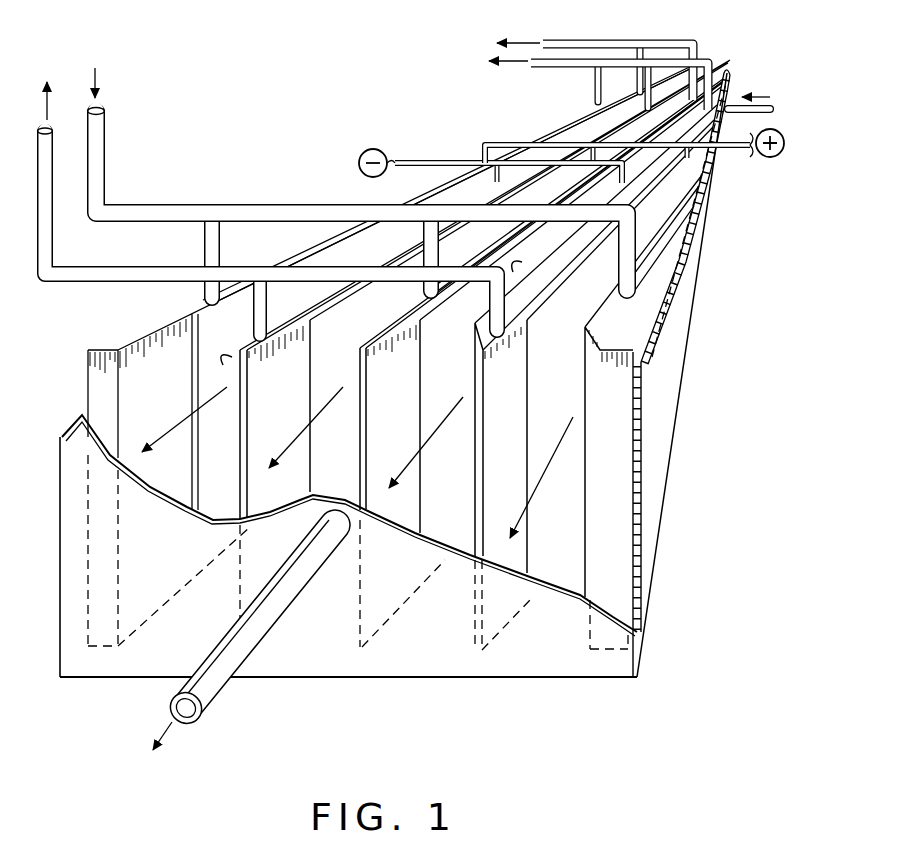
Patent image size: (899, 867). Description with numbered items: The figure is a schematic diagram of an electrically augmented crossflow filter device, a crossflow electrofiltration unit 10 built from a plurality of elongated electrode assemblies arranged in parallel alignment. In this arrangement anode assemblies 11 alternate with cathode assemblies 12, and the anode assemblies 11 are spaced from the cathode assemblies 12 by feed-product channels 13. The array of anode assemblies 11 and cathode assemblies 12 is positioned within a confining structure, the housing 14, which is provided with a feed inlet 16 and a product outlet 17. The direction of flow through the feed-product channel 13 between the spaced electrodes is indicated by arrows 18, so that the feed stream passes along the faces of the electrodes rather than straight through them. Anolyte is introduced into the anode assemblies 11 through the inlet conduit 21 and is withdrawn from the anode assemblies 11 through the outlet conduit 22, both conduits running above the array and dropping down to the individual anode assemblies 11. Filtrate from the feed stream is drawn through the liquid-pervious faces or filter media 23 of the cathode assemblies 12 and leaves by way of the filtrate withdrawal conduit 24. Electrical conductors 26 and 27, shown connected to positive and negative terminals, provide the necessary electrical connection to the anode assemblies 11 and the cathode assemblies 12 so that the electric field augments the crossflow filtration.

The electrolytic cell tank 10 is at (663, 600).
The anode assemblies 11 is at (150, 352).
The cathode assemblies 12 is at (363, 260).
The feed-product channels 13 is at (333, 347).
The housing 14 is at (522, 663).
The feed inlet 16 is at (736, 98).
The product outlet 17 is at (198, 688).
The arrows 18 is at (178, 423).
The inlet conduit 21 is at (104, 160).
The outlet conduit 22 is at (565, 68).
The filter media 23 is at (352, 448).
The filtrate withdrawal conduit 24 is at (52, 225).
The electrical conductor 26 is at (740, 150).
The electrical conductor 27 is at (433, 158).